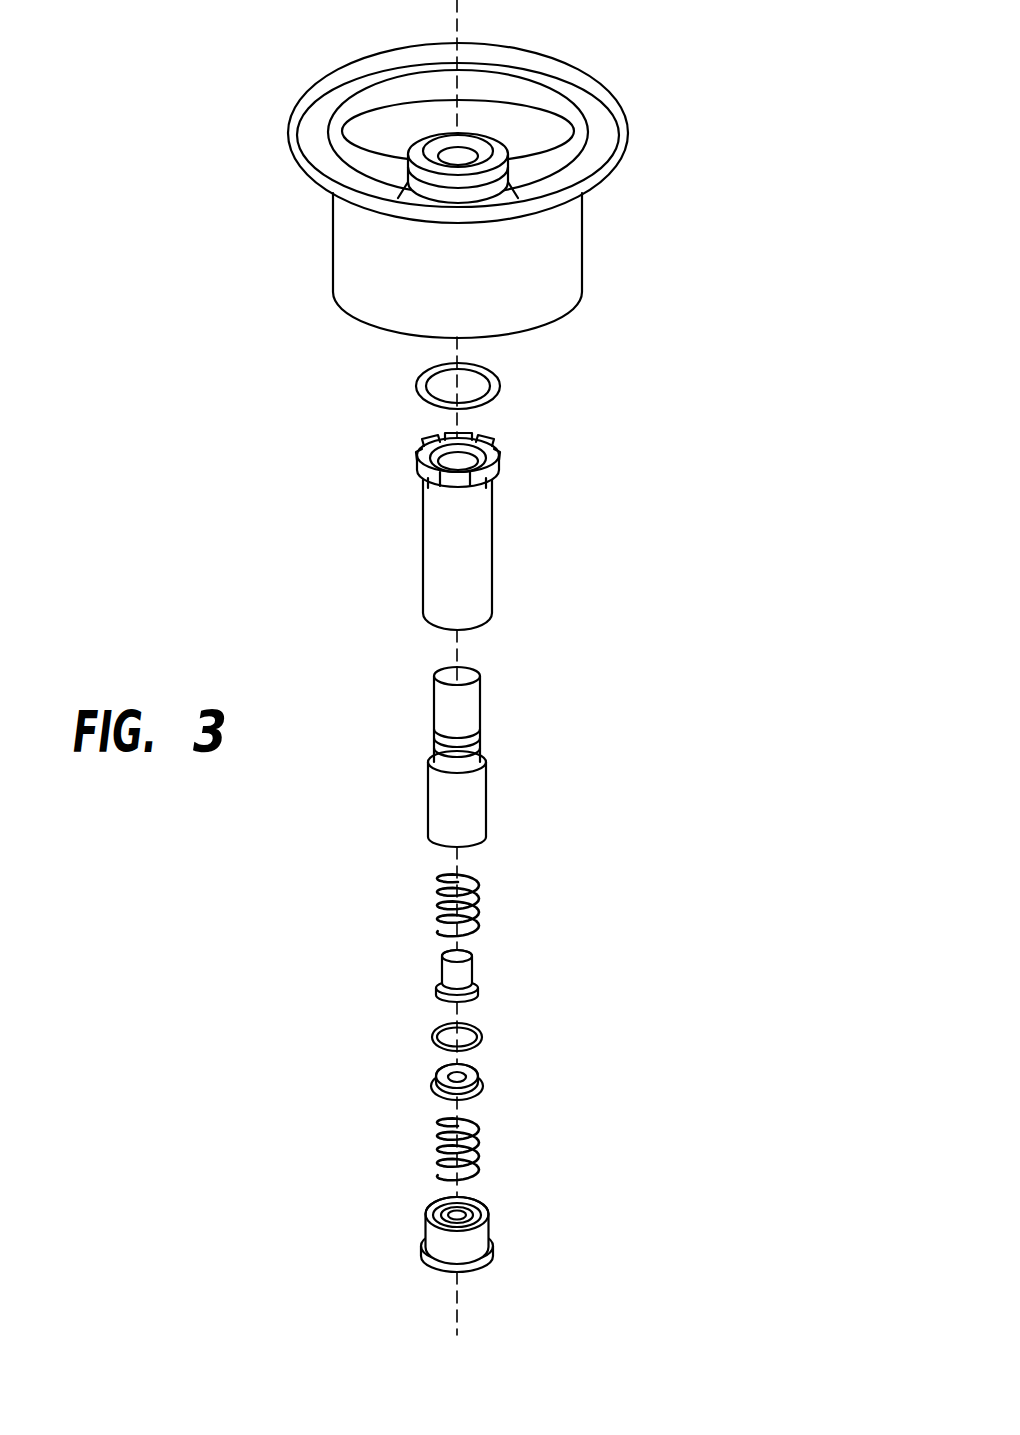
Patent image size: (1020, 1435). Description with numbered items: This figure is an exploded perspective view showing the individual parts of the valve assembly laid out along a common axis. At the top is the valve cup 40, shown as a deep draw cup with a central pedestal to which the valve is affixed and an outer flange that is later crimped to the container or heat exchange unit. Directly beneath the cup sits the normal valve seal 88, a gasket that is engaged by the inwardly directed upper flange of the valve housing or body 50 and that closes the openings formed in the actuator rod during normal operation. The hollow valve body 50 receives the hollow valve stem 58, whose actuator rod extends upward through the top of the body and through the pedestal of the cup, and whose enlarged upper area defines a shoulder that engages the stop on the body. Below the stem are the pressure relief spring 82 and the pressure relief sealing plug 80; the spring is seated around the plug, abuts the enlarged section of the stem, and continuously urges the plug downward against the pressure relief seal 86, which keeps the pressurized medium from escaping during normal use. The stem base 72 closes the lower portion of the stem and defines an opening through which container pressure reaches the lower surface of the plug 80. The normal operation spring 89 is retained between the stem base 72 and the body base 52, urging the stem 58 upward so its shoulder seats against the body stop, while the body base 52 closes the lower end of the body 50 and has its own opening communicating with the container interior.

The valve cup 40 is at (572, 251).
The normal valve seal 88 is at (413, 387).
The valve housing or body 50 is at (482, 548).
The valve stem 58 is at (480, 718).
The pressure relief spring 82 is at (437, 890).
The pressure relief sealing plug 80 is at (472, 971).
The pressure relief seal 86 is at (433, 1038).
The stem base 72 is at (483, 1081).
The normal operation spring 89 is at (437, 1135).
The body base 52 is at (488, 1228).